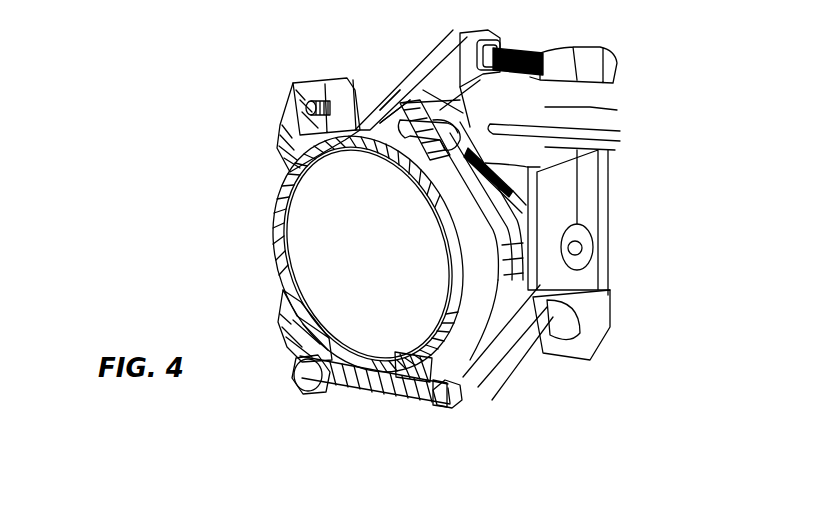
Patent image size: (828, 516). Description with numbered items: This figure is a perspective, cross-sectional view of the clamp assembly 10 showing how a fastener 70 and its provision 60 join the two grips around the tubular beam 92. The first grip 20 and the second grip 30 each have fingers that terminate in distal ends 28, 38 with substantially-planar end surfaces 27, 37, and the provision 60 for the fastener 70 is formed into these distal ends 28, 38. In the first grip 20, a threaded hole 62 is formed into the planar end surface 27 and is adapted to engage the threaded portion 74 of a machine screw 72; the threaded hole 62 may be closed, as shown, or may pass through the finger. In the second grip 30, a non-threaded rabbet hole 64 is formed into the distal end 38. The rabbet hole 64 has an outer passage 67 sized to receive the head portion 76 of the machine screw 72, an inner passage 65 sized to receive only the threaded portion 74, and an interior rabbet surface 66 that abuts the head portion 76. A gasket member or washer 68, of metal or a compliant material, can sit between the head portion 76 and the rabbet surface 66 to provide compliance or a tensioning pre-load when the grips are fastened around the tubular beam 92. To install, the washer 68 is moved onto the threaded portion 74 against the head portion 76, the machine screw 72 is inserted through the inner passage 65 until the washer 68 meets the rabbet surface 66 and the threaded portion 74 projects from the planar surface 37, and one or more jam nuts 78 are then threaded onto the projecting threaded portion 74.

The clamp assembly 10 is at (138, 187).
The first grip 20 is at (277, 297).
The substantially-planar end surface 27 is at (340, 103).
The distal end 28 is at (280, 117).
The second grip 30 is at (507, 353).
The substantially-planar end surface 37 is at (397, 140).
The distal end 38 is at (547, 153).
The provision for a fastener 60 is at (283, 72).
The threaded hole 62 is at (317, 110).
The rabbet hole 64 is at (523, 58).
The inner passage 65 is at (408, 132).
The interior rabbet surface 66 is at (430, 120).
The outer passage 67 is at (447, 150).
The washer 68 is at (420, 377).
The fastener 70 is at (334, 437).
The machine screw 72 is at (367, 398).
The threaded portion 74 is at (312, 382).
The head portion 76 is at (450, 405).
The jam nut 78 is at (397, 402).
The tubular beam 92 is at (287, 263).